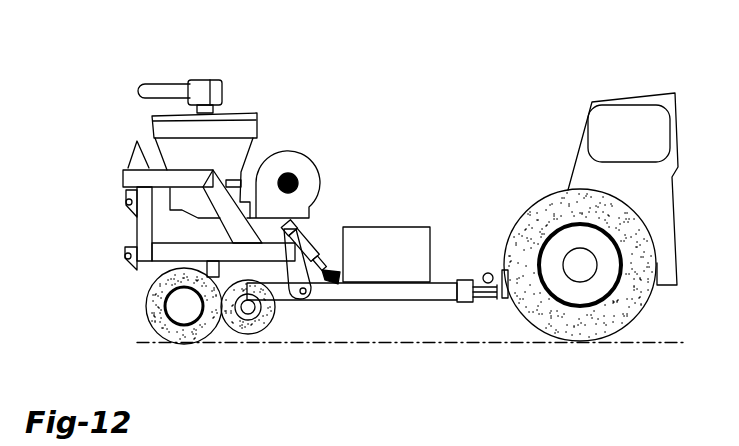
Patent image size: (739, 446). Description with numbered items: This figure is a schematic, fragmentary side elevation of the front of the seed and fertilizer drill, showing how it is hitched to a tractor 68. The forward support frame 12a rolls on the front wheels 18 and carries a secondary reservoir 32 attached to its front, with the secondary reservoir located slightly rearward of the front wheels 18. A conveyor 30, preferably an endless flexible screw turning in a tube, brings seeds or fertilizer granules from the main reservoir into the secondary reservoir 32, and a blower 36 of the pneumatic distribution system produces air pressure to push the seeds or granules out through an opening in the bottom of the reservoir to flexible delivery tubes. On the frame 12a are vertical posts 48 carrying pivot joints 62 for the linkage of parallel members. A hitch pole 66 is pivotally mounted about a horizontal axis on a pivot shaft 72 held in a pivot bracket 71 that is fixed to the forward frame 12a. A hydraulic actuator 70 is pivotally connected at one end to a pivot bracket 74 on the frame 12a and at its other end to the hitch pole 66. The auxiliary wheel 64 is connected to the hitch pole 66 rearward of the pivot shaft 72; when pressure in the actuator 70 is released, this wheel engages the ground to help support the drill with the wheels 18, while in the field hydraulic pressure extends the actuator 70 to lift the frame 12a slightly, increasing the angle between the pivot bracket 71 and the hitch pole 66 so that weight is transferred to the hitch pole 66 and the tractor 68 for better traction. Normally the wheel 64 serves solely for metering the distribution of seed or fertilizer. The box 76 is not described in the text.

The conveyor 30 is at (173, 85).
The secondary reservoir 32 is at (261, 135).
The blower 36 is at (300, 165).
The pivot bracket 74 is at (292, 228).
The hydraulic actuator 70 is at (310, 238).
The power unit 76 is at (407, 230).
The pivot joint 62 is at (126, 202).
The vertical post 48 is at (143, 231).
The support frame 12a is at (163, 263).
The front wheel 18 is at (190, 337).
The auxiliary wheel 64 is at (257, 333).
The pivot bracket 71 is at (284, 302).
The pivot shaft 72 is at (310, 292).
The hitch pole 66 is at (438, 292).
The tractor 68 is at (598, 323).